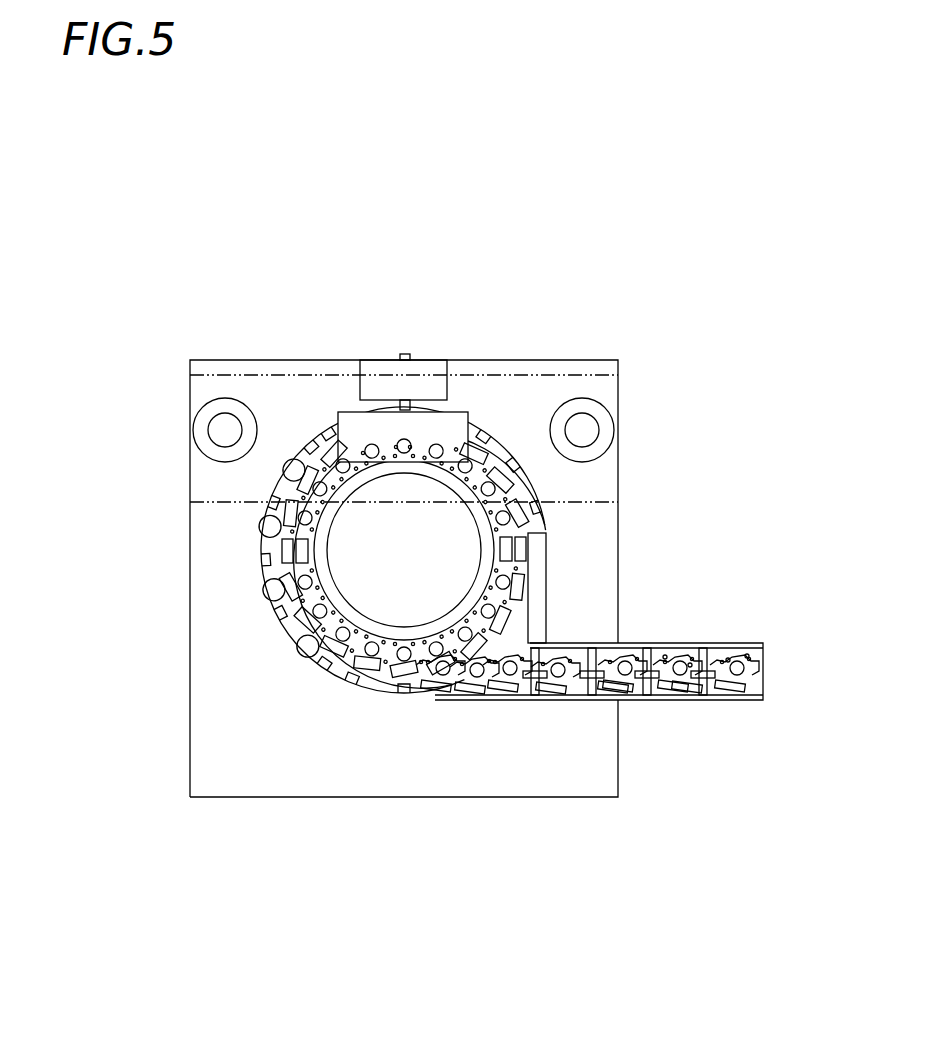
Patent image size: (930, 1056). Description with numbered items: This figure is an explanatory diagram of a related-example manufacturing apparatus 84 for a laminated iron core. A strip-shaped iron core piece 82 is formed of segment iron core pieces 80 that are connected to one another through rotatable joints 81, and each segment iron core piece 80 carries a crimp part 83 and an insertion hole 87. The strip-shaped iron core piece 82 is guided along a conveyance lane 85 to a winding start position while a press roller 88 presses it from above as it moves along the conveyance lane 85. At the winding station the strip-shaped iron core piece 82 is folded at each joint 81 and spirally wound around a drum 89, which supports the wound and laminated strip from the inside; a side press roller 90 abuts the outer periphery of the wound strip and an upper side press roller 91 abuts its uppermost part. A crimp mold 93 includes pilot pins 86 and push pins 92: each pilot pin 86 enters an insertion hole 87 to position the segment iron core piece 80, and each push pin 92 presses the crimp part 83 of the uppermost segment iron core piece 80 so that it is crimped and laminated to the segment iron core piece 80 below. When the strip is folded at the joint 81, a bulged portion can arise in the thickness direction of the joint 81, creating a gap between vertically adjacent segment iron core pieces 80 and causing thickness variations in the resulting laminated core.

The segment iron core piece 80 is at (687, 690).
The rotatable joint 81 is at (418, 690).
The strip-shaped iron core piece 82 is at (748, 695).
The crimp part 83 is at (690, 665).
The manufacturing apparatus 84 is at (195, 218).
The conveyance lane 85 is at (618, 693).
The pilot pin 86 is at (372, 440).
The insertion hole 87 is at (625, 665).
The press roller 88 is at (592, 700).
The drum 89 is at (460, 485).
The side press roller 90 is at (270, 527).
The upper side press roller 91 is at (512, 545).
The push pin 92 is at (363, 452).
The crimp mold 93 is at (458, 420).